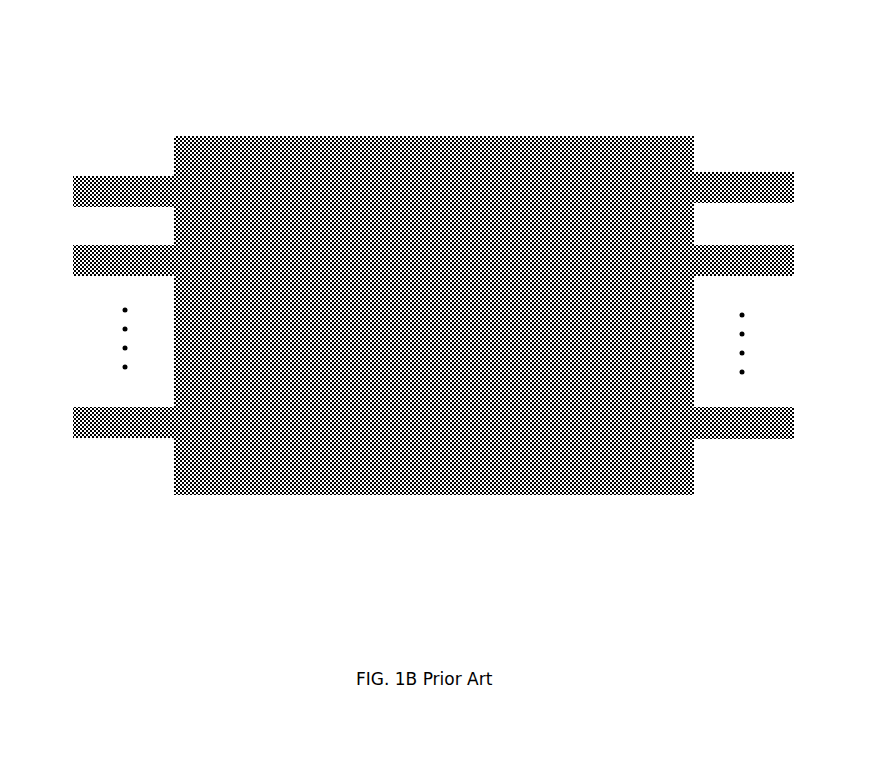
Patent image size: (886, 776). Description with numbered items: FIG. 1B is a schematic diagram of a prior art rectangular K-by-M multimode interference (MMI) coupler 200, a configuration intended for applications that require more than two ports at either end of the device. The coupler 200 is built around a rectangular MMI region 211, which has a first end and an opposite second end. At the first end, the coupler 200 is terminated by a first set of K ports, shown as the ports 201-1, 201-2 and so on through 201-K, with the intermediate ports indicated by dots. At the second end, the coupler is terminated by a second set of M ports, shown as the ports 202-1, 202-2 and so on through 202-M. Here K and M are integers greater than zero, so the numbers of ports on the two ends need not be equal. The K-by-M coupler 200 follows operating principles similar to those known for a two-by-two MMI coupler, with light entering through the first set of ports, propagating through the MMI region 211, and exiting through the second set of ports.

The rectangular K×M MMI coupler 200 is at (273, 100).
The rectangular MMI region 211 is at (522, 170).
The first port of the first set of K ports 201-1 is at (92, 191).
The second port of the first set of K ports 201-2 is at (92, 260).
The K-th port of the first set of K ports 201-K is at (92, 422).
The first port of the second set of M ports 202-1 is at (776, 187).
The second port of the second set of M ports 202-2 is at (776, 260).
The M-th port of the second set of M ports 202-M is at (778, 423).